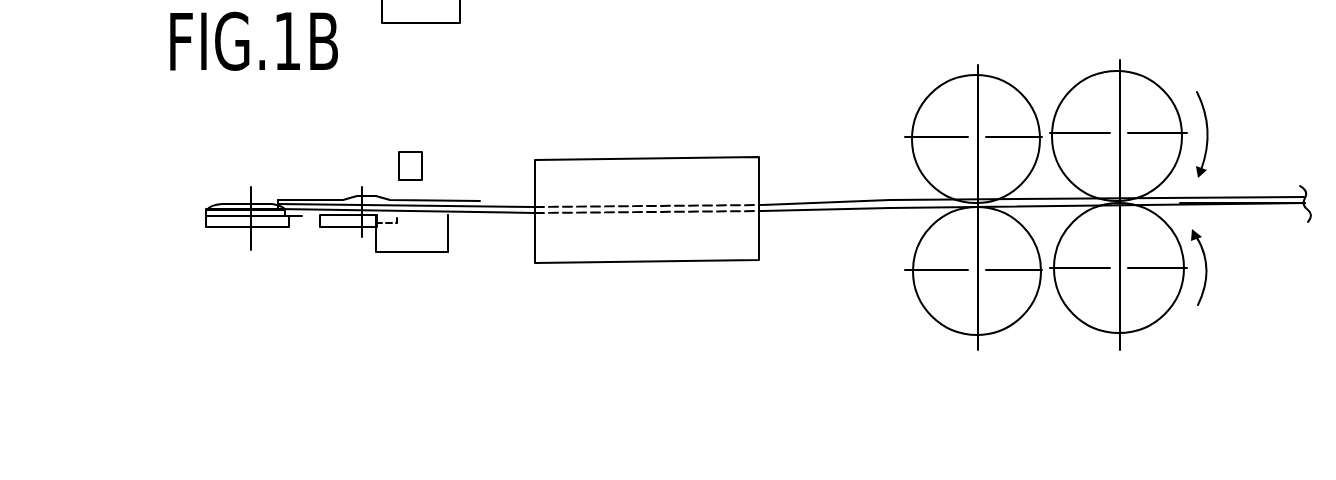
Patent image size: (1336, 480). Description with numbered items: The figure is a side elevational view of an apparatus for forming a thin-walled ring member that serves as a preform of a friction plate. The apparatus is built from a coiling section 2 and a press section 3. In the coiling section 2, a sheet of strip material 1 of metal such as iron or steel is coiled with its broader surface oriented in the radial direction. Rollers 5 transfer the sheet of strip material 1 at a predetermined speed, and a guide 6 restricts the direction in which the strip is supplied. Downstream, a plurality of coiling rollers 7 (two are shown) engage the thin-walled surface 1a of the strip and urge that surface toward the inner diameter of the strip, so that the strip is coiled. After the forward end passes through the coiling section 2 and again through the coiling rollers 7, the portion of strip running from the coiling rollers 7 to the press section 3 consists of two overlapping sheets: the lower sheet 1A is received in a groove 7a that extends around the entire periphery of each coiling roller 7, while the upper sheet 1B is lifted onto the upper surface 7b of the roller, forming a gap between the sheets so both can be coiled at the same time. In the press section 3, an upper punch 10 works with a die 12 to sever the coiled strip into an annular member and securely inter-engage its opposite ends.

The sheet of strip material 1 is at (1276, 176).
The thin-walled surface 1a is at (1248, 206).
The lower sheet of strip material 1A is at (302, 209).
The upper sheet of strip material 1B is at (313, 199).
The coiling section 2 is at (291, 162).
The press section 3 is at (432, 265).
The rollers 5 is at (1143, 95).
The guide 6 is at (715, 175).
The coiling rollers 7 is at (222, 230).
The groove 7a is at (230, 202).
The upper surface of the coiling roller 7b is at (241, 204).
The upper punch 10 is at (422, 165).
The die 12 is at (447, 233).